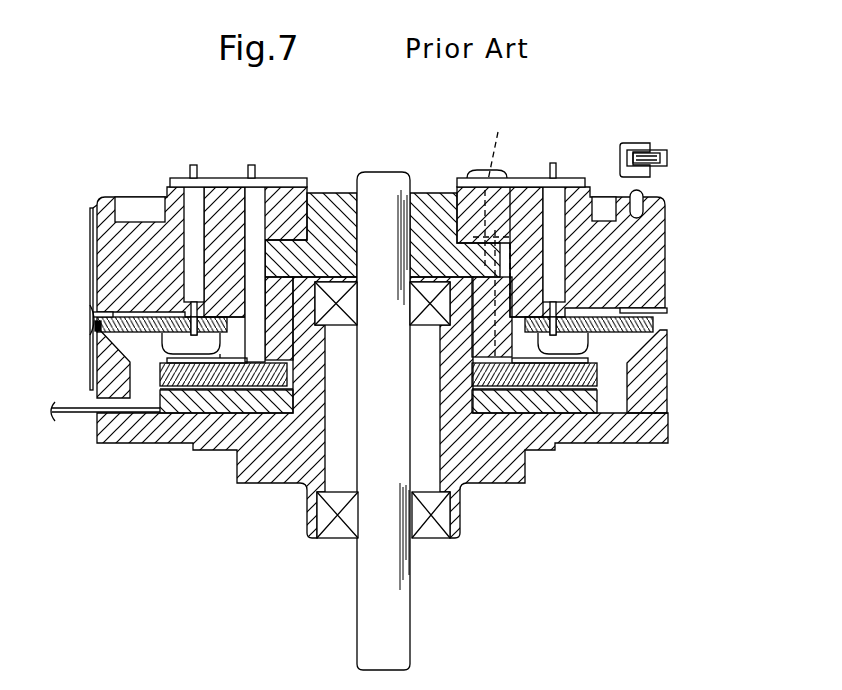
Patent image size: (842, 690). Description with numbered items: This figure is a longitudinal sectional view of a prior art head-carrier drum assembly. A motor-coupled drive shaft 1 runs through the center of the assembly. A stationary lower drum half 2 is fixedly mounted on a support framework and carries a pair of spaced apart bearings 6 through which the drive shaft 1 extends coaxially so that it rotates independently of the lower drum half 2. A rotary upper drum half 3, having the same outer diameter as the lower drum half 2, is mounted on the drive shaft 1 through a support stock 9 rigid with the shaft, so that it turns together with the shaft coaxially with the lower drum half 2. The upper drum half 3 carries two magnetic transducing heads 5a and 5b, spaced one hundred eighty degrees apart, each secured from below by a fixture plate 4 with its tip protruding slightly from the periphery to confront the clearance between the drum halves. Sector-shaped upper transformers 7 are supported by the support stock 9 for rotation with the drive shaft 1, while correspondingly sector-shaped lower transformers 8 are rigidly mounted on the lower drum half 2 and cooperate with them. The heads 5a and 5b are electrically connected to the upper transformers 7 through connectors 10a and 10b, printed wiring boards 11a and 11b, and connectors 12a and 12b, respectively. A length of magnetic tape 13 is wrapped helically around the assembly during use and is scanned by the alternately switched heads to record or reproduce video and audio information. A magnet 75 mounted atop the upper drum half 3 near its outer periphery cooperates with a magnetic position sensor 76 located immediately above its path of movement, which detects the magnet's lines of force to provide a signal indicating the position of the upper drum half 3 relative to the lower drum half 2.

The drive shaft 1 is at (403, 600).
The lower drum half 2 is at (487, 478).
The upper drum half 3 is at (658, 268).
The fixture plate 4 is at (637, 330).
The magnetic transducing head 5a is at (660, 310).
The magnetic transducing head 5b is at (95, 330).
The bearing 6 is at (336, 282).
The upper transformer 7 is at (587, 377).
The lower transformer 8 is at (563, 405).
The support stock 9 is at (435, 193).
The connector 10a is at (555, 213).
The connector 10b is at (190, 200).
The printed wiring board 11a is at (533, 178).
The printed wiring board 11b is at (212, 178).
The connector 12a is at (500, 231).
The connector 12b is at (258, 213).
The magnetic tape 13 is at (90, 282).
The magnet 75 is at (640, 192).
The magnetic position sensor 76 is at (655, 150).